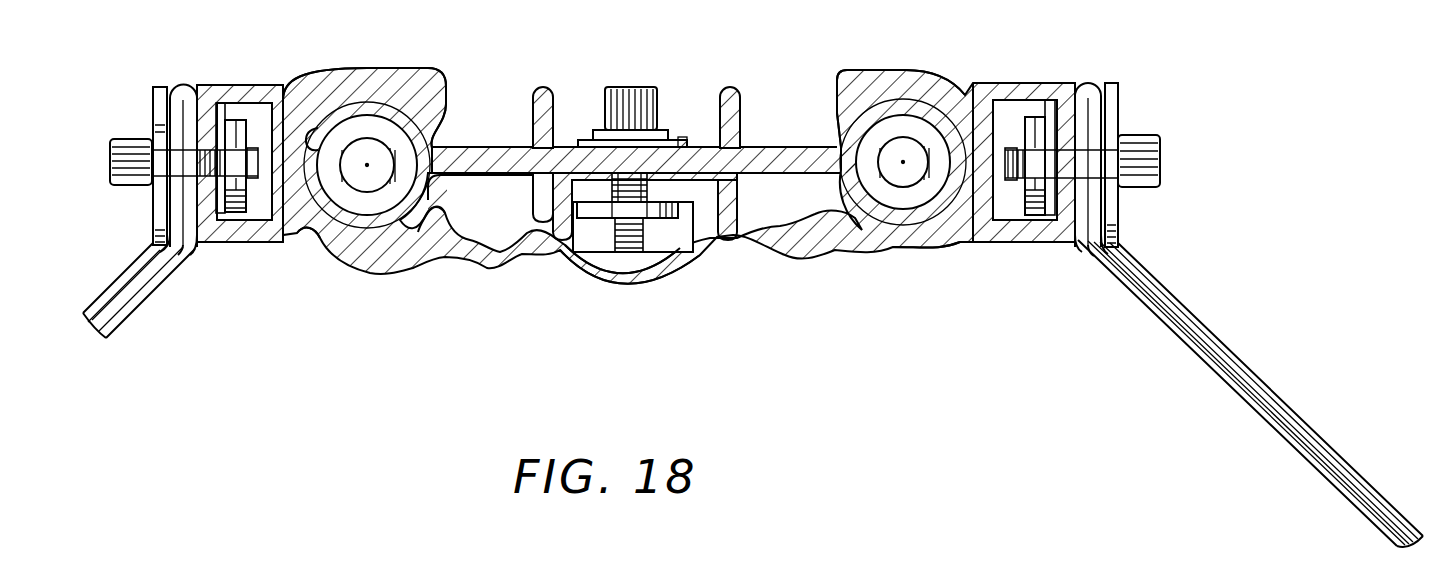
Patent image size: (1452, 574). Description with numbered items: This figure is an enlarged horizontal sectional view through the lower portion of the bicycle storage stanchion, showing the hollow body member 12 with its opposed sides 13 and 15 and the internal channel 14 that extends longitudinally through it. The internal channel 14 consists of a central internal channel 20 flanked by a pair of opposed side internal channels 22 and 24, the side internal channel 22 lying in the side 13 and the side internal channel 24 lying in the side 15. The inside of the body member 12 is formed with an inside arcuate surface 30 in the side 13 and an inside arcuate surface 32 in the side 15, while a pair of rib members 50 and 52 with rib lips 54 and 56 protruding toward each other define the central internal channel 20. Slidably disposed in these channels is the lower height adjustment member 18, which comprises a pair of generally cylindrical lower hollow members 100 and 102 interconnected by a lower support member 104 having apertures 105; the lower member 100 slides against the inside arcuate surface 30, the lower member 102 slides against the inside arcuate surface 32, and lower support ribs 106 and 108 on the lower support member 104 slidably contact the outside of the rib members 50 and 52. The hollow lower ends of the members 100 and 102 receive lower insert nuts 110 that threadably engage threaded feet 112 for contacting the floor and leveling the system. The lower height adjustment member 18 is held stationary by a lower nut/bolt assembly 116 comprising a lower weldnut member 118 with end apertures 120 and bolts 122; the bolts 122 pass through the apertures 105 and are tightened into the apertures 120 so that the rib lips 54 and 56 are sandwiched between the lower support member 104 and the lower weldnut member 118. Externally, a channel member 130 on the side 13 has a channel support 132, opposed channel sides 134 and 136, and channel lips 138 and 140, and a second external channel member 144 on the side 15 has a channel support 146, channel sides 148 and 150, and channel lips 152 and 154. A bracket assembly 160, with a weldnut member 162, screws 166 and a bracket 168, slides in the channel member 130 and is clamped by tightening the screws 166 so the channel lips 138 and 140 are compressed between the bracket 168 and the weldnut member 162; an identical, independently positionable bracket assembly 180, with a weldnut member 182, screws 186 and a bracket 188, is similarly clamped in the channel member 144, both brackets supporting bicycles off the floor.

The hollow body member 12 is at (727, 227).
The side 13 is at (318, 234).
The internal channel 14 is at (814, 100).
The side 15 is at (968, 210).
The lower height adjustment member 18 is at (781, 147).
The central internal channel 20 is at (677, 237).
The side internal channel 22 is at (313, 153).
The side internal channel 24 is at (1100, 165).
The inside arcuate surface 30 is at (300, 200).
The inside arcuate surface 32 is at (953, 175).
The rib member 50 is at (702, 217).
The rib member 52 is at (582, 182).
The rib lip 54 is at (685, 195).
The rib lip 56 is at (603, 212).
The generally cylindrical lower hollow member 100 is at (424, 148).
The generally cylindrical lower hollow member 102 is at (888, 97).
The lower support member 104 is at (520, 157).
The aperture 105 is at (683, 137).
The lower support rib 106 is at (547, 98).
The lower support rib 108 is at (732, 110).
The lower insert nut 110 is at (422, 152).
The threaded foot 112 is at (377, 173).
The lower nut/bolt assembly 116 is at (670, 92).
The lower weldnut member 118 is at (620, 248).
The end aperture 120 is at (622, 265).
The bolt 122 is at (633, 107).
The external channel member 130 is at (208, 82).
The channel support 132 is at (280, 150).
The channel side 134 is at (247, 240).
The channel side 136 is at (247, 87).
The channel lip 138 is at (228, 120).
The channel lip 140 is at (190, 252).
The external channel member 144 is at (1088, 78).
The channel support 146 is at (990, 128).
The channel side 148 is at (1040, 100).
The channel side 150 is at (1023, 228).
The channel lip 152 is at (1080, 112).
The channel lip 154 is at (1120, 218).
The bracket assembly 160 is at (122, 330).
The weldnut member 162 is at (233, 143).
The screw 166 is at (132, 157).
The bracket 168 is at (143, 303).
The bracket assembly 180 is at (1210, 322).
The weldnut member 182 is at (1010, 230).
The screw 186 is at (1147, 174).
The bracket 188 is at (1330, 460).